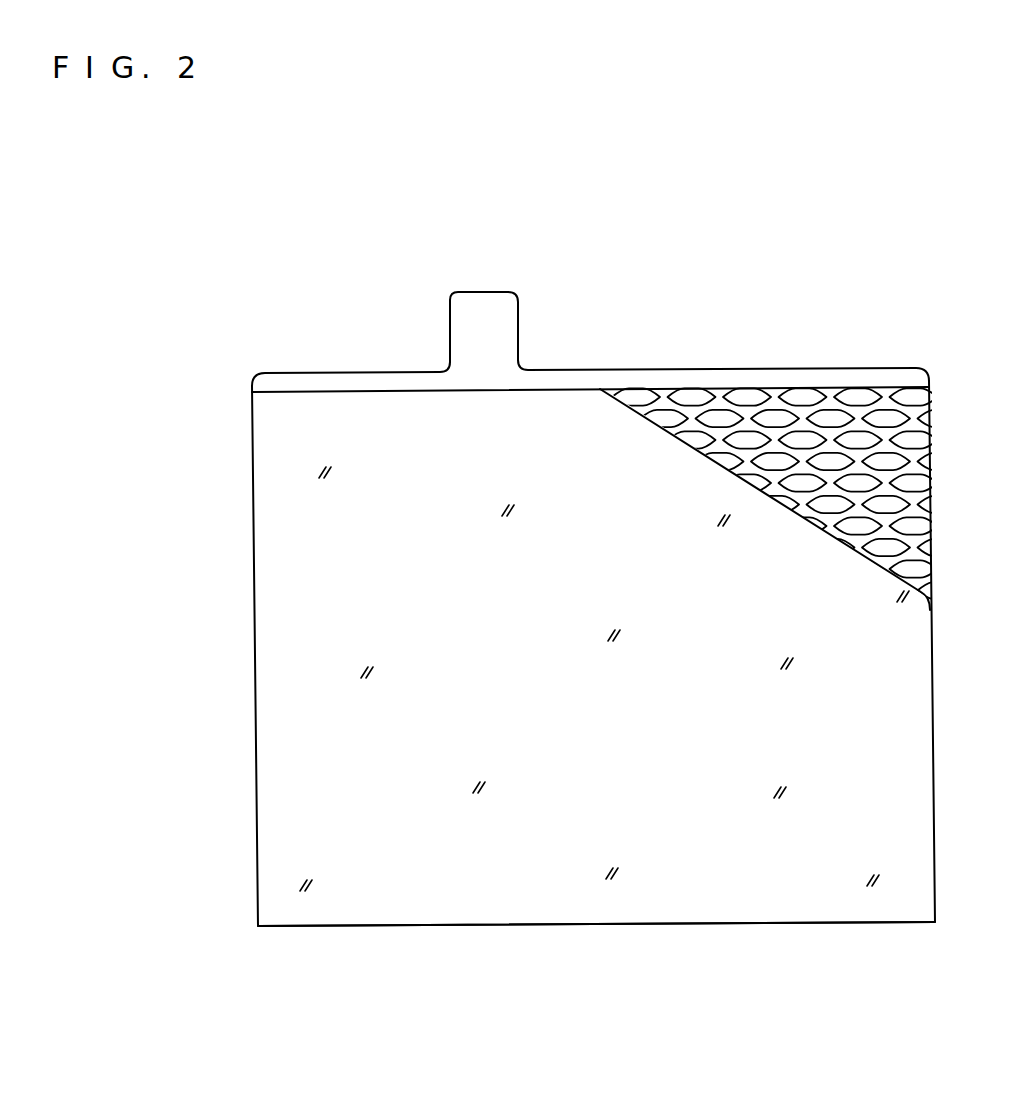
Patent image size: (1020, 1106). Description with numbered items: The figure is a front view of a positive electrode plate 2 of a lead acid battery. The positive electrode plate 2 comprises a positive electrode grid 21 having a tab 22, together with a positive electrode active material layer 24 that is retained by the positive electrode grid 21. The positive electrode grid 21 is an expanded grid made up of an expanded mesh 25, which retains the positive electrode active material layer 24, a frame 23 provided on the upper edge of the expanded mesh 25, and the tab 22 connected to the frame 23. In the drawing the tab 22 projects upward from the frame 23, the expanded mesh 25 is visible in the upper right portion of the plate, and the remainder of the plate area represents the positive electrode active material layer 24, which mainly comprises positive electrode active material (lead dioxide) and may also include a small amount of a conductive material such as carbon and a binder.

The positive electrode plate 2 is at (721, 360).
The positive electrode grid 21 is at (838, 382).
The tab 22 is at (485, 315).
The frame 23 is at (603, 373).
The positive electrode active material layer 24 is at (714, 895).
The expanded mesh 25 is at (652, 398).